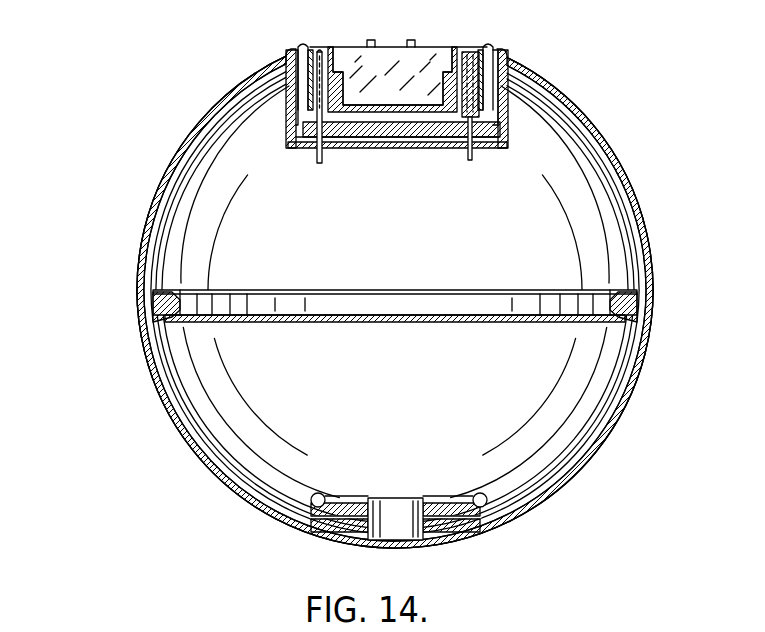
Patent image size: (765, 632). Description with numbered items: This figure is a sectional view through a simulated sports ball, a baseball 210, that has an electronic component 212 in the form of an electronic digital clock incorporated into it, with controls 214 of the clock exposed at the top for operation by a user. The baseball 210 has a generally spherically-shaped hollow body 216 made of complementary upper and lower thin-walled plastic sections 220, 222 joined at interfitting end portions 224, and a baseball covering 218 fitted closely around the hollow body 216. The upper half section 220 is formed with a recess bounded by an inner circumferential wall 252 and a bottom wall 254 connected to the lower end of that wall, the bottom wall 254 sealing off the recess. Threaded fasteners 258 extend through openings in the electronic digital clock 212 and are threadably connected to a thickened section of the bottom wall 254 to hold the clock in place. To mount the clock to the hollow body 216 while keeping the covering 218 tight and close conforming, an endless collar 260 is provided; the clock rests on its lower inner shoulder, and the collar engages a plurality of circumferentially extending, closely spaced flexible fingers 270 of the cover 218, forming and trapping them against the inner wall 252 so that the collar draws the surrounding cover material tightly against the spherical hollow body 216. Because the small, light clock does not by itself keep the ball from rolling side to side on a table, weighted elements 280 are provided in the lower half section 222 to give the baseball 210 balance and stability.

The baseball 210 is at (554, 71).
The electronic component 212 is at (436, 45).
The controls 214 is at (365, 45).
The hollow body 216 is at (647, 249).
The baseball covering 218 is at (650, 291).
The upper thin-walled plastic section 220 is at (200, 140).
The lower thin-walled plastic section 222 is at (183, 438).
The interfitting end portions 224 is at (130, 315).
The inner circumferential wall 252 is at (505, 128).
The bottom wall 254 is at (390, 150).
The threaded fasteners 258 is at (474, 160).
The endless collar 260 is at (298, 170).
The flexible fingers 270 is at (284, 105).
The weighted elements 280 is at (460, 505).